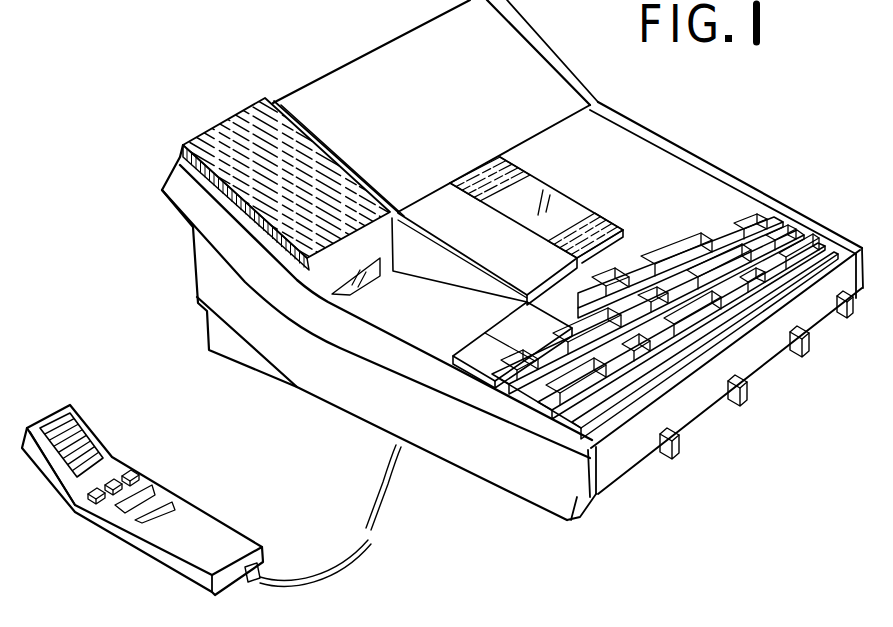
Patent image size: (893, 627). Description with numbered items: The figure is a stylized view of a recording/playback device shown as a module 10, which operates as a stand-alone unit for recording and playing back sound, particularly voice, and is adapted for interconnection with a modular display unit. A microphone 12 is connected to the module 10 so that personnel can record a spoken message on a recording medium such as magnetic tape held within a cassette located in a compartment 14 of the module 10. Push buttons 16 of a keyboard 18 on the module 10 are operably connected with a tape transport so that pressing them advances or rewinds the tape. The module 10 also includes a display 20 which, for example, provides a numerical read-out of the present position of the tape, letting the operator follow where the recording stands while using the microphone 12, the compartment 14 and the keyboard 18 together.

The module 10 is at (252, 69).
The microphone 12 is at (93, 431).
The compartment 14 is at (670, 168).
The push buttons 16 is at (827, 237).
The keyboard 18 is at (702, 398).
The display 20 is at (372, 276).